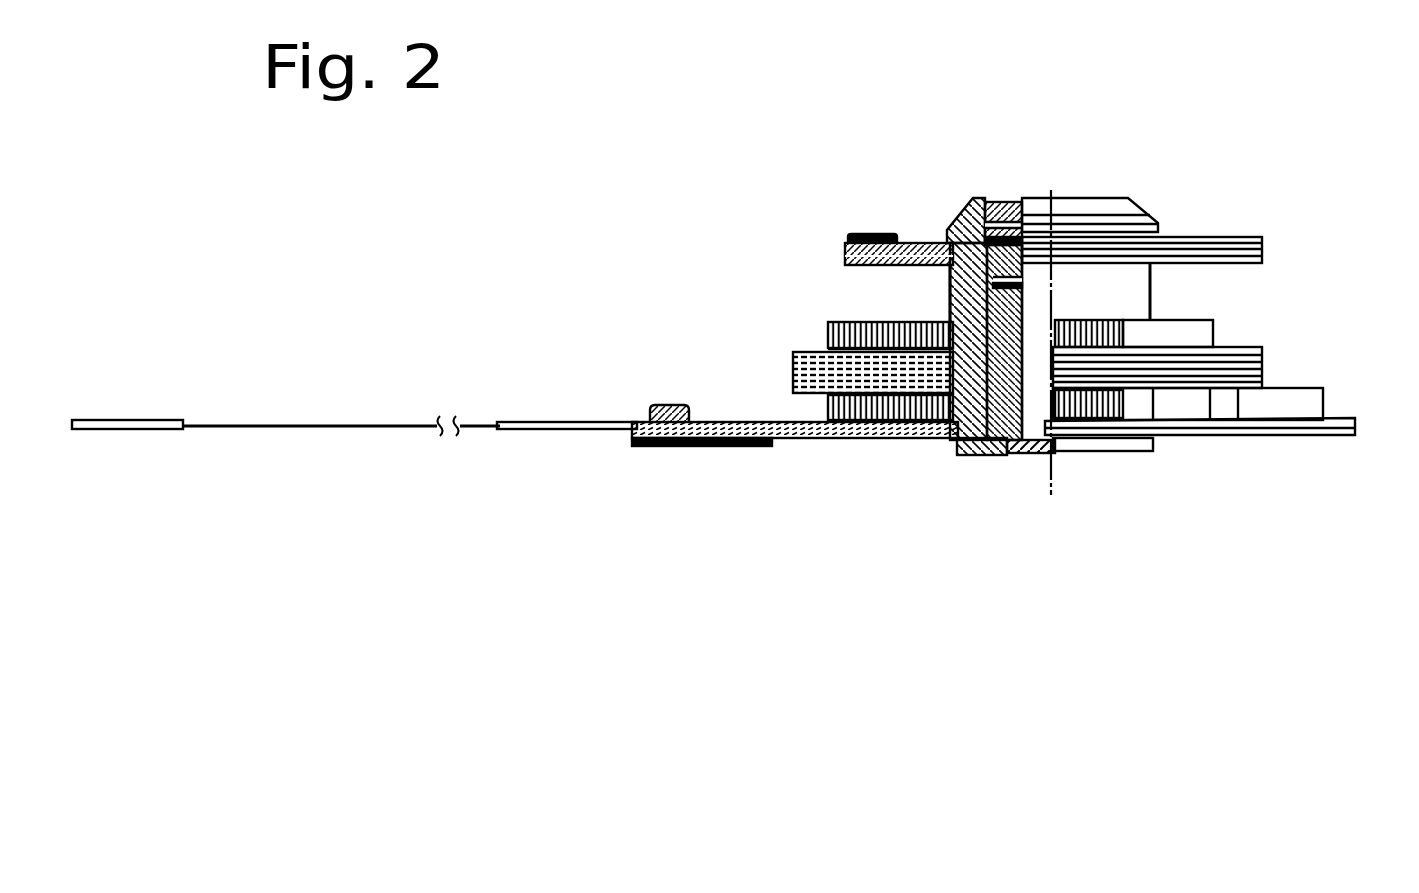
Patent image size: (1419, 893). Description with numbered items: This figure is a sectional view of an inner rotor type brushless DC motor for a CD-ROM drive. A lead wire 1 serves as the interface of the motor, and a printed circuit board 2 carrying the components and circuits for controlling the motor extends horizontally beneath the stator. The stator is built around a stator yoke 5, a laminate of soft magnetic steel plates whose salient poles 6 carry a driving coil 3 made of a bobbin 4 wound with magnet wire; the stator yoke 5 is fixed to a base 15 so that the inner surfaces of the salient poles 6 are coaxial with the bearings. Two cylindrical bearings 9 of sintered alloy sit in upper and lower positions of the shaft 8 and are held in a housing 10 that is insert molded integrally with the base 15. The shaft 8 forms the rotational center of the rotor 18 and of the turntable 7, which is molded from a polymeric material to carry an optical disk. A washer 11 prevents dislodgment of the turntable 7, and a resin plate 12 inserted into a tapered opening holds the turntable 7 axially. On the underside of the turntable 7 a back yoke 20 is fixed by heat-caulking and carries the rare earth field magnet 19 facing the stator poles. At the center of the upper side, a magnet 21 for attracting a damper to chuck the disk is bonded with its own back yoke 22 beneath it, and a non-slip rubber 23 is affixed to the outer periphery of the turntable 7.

The lead wire 1 is at (278, 424).
The printed circuit board 2 is at (753, 447).
The driving coil 3 is at (946, 318).
The bobbin 4 is at (856, 323).
The stator yoke 5 is at (800, 373).
The salient pole 6 is at (877, 440).
The turntable 7 is at (1140, 213).
The shaft 8 is at (1042, 302).
The bearing 9 is at (1038, 300).
The housing 10 is at (930, 440).
The washer 11 is at (1000, 457).
The resin plate 12 is at (1033, 457).
The base 15 is at (1238, 435).
The rotor 18 is at (1160, 297).
The field magnet 19 is at (950, 297).
The back yoke 20 is at (847, 243).
The magnet 21 is at (1003, 202).
The back yoke 22 is at (972, 200).
The non-slip rubber 23 is at (868, 237).